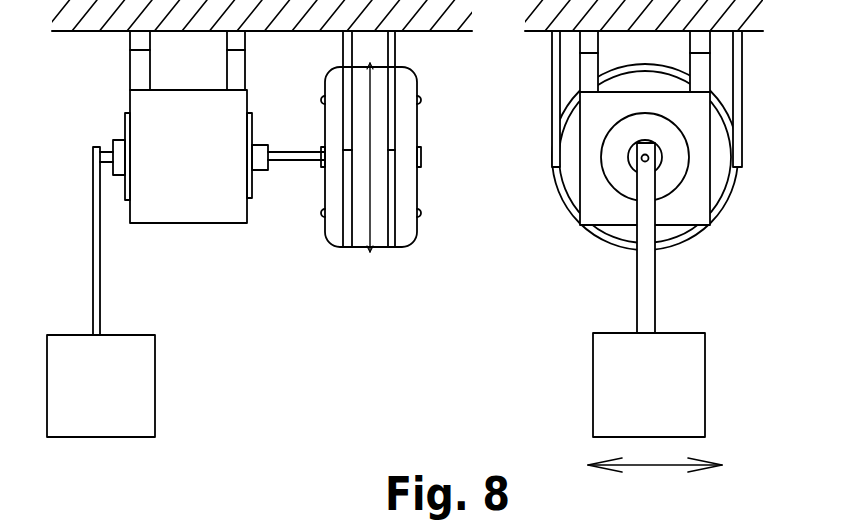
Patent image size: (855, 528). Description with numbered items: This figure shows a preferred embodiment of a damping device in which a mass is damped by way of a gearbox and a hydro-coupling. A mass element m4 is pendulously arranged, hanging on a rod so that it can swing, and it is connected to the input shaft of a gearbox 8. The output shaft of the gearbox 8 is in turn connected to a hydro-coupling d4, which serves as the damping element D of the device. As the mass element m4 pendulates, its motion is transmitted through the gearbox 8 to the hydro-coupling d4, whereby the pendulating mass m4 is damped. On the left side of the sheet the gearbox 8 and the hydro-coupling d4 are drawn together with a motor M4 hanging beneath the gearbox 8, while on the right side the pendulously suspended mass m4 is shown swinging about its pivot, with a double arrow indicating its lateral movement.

The gearbox 8 is at (195, 207).
The damping element D is at (413, 167).
The hydro-coupling d4 is at (408, 228).
The motor (primary mass) M4 is at (133, 368).
The mass element m4 is at (693, 364).